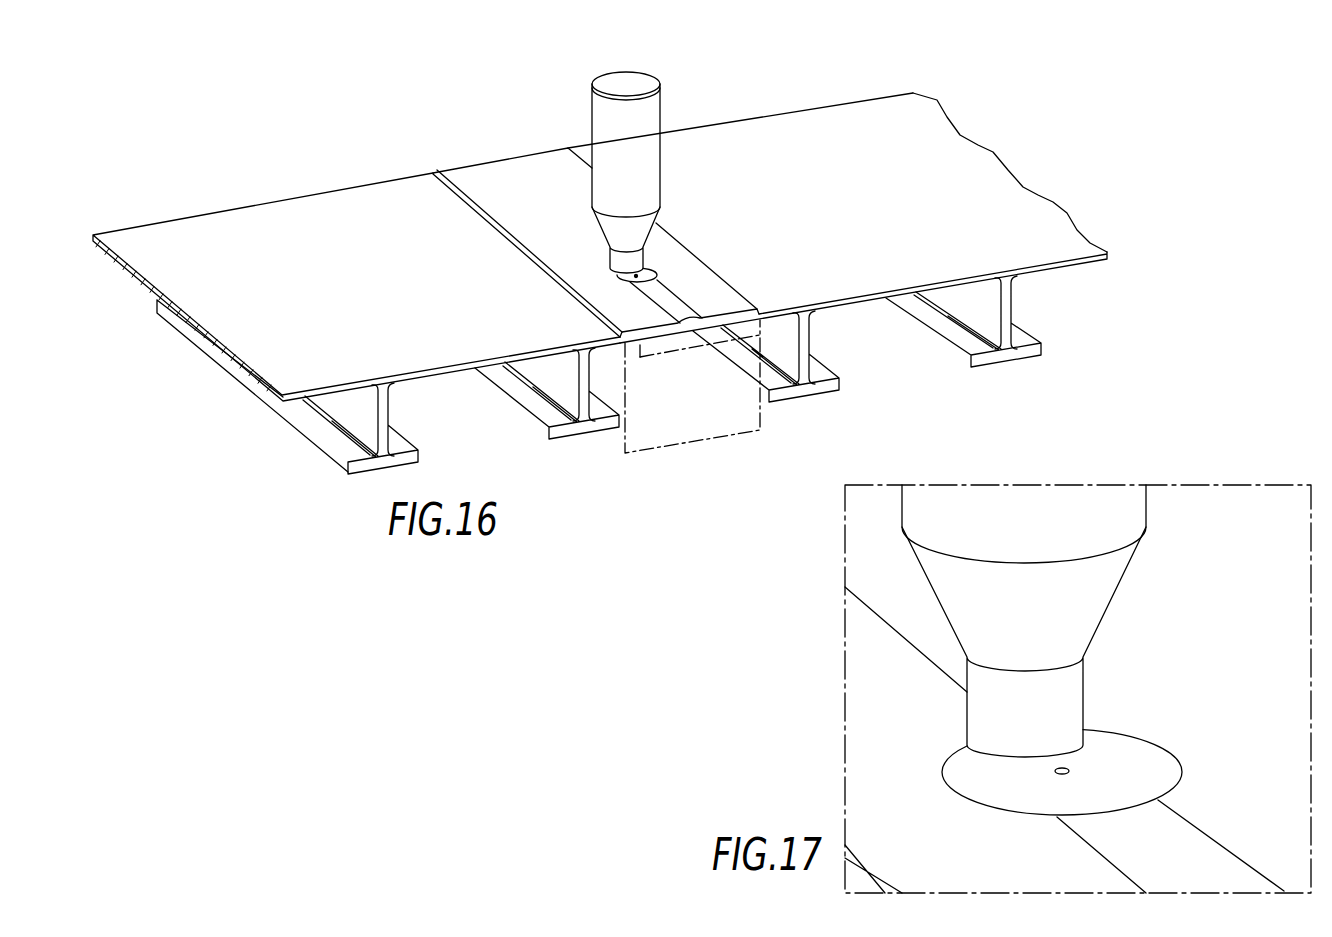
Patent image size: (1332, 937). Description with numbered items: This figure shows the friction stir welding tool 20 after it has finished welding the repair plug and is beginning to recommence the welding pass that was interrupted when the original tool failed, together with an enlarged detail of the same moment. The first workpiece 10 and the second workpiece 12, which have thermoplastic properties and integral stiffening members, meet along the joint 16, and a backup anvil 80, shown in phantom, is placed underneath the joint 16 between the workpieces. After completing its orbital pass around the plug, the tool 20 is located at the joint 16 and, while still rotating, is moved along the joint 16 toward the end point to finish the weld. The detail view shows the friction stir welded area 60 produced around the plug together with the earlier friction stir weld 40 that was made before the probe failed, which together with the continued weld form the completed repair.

In FIG. 16, the first workpiece 10 is at (381, 315).
In FIG. 16, the second workpiece 12 is at (843, 215).
In FIG. 16, the joint 16 is at (555, 176).
In FIG. 16, the friction stir welding tool 20 is at (655, 118).
In FIG. 16, the backup anvil 80 is at (681, 430).
In FIG. 17, the friction stir welded area 60 is at (1127, 741).
In FIG. 17, the friction stir weld 40 is at (1168, 864).